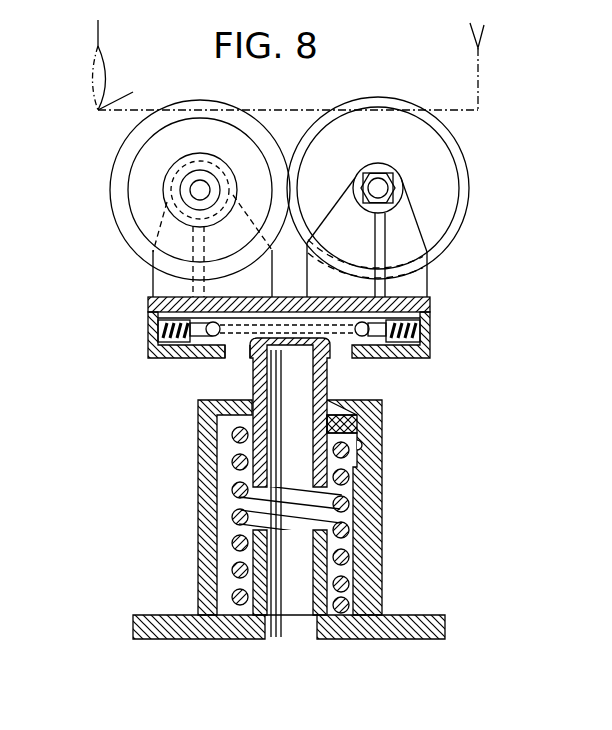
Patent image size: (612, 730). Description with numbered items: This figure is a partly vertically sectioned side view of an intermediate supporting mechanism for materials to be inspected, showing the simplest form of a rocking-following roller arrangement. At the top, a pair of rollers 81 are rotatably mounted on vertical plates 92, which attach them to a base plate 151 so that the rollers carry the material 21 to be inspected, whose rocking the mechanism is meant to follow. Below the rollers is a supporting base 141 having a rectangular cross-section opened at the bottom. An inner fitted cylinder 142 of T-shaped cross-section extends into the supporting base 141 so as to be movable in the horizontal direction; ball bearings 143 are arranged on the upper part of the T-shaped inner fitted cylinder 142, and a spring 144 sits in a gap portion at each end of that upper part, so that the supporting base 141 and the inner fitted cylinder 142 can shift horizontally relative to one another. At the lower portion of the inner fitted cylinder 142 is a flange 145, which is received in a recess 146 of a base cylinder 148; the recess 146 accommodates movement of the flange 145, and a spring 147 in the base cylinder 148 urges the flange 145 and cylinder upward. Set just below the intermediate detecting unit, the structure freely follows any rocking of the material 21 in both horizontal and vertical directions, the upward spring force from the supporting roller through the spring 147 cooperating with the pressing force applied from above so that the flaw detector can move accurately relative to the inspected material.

The material to be inspected 21 is at (98, 111).
The roller 81 is at (118, 207).
The vertical plate 92 is at (415, 283).
The base plate 151 is at (148, 300).
The spring 144 is at (430, 329).
The supporting base 141 is at (148, 351).
The ball bearings 143 is at (242, 353).
The inner fitted cylinder 142 is at (320, 372).
The flange 145 is at (345, 422).
The recess 146 is at (376, 456).
The spring 147 is at (236, 486).
The base cylinder 148 is at (370, 600).